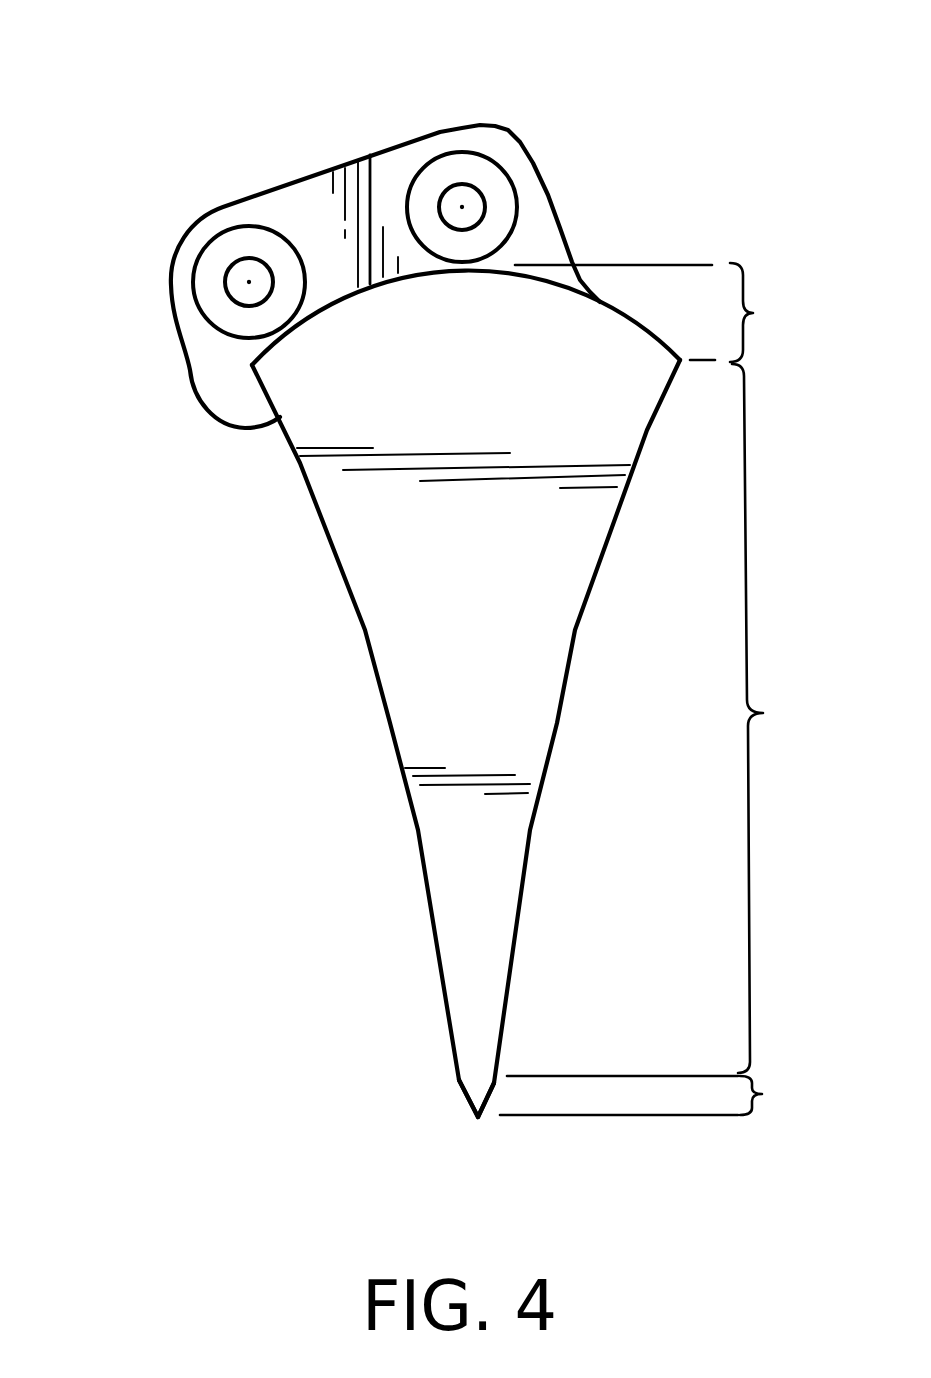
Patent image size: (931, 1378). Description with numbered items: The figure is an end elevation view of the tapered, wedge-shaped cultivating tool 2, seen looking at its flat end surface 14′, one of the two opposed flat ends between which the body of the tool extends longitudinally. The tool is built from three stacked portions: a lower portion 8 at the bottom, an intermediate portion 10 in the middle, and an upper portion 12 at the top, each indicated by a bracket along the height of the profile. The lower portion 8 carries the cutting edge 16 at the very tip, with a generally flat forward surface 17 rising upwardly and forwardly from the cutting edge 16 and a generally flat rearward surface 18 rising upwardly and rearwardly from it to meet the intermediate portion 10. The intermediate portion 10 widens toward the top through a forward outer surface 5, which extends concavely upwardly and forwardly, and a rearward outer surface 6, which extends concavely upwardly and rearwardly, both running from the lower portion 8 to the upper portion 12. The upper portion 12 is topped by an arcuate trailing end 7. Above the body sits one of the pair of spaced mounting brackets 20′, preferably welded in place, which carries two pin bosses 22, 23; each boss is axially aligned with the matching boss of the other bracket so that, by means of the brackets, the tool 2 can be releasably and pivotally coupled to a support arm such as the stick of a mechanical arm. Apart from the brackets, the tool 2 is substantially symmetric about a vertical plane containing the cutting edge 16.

The cultivating tool 2 is at (382, 618).
The mounting bracket 20′ is at (278, 190).
The pin boss 22 is at (480, 170).
The pin boss 23 is at (207, 297).
The trailing end 7 is at (630, 315).
The upper portion 12 is at (663, 312).
The intermediate portion 10 is at (775, 718).
The lower portion 8 is at (651, 1092).
The end surface 14′ is at (466, 740).
The forward outer surface 5 is at (390, 720).
The rearward outer surface 6 is at (555, 718).
The cutting edge 16 is at (487, 1107).
The forward surface 17 is at (462, 1093).
The rearward surface 18 is at (489, 1115).